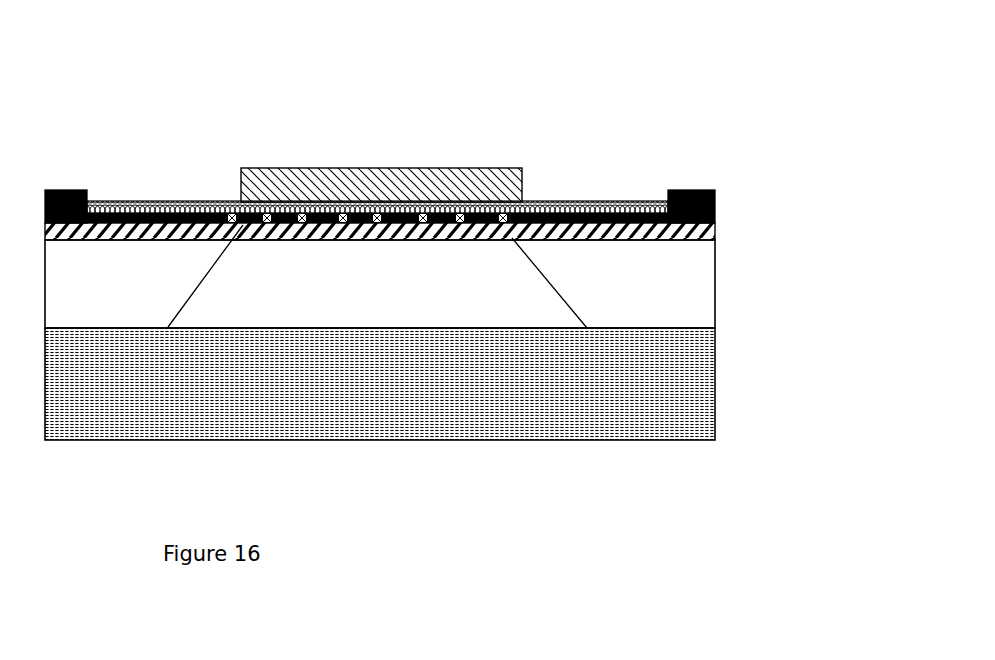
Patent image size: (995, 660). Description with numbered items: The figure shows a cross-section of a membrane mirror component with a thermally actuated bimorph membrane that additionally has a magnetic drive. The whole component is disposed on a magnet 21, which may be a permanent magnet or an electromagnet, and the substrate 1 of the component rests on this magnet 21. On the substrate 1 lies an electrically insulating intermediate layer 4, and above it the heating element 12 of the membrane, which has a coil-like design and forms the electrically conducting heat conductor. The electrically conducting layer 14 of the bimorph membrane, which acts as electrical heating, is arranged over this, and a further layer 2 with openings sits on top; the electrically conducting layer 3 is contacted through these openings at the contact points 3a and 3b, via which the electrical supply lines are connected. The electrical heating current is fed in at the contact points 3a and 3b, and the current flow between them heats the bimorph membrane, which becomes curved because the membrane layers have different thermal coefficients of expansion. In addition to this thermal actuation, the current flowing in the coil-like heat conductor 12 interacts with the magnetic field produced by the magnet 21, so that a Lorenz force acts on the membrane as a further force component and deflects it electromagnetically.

The substrate 1 is at (697, 293).
The layer 2 is at (395, 187).
The electrically conducting layer 3 is at (715, 210).
The contact point 3a is at (72, 190).
The contact point 3b is at (690, 192).
The electrically insulating intermediate layer 4 is at (673, 242).
The heating element 12 is at (318, 224).
The electrically conducting layer 14 is at (575, 198).
The magnet 21 is at (700, 377).